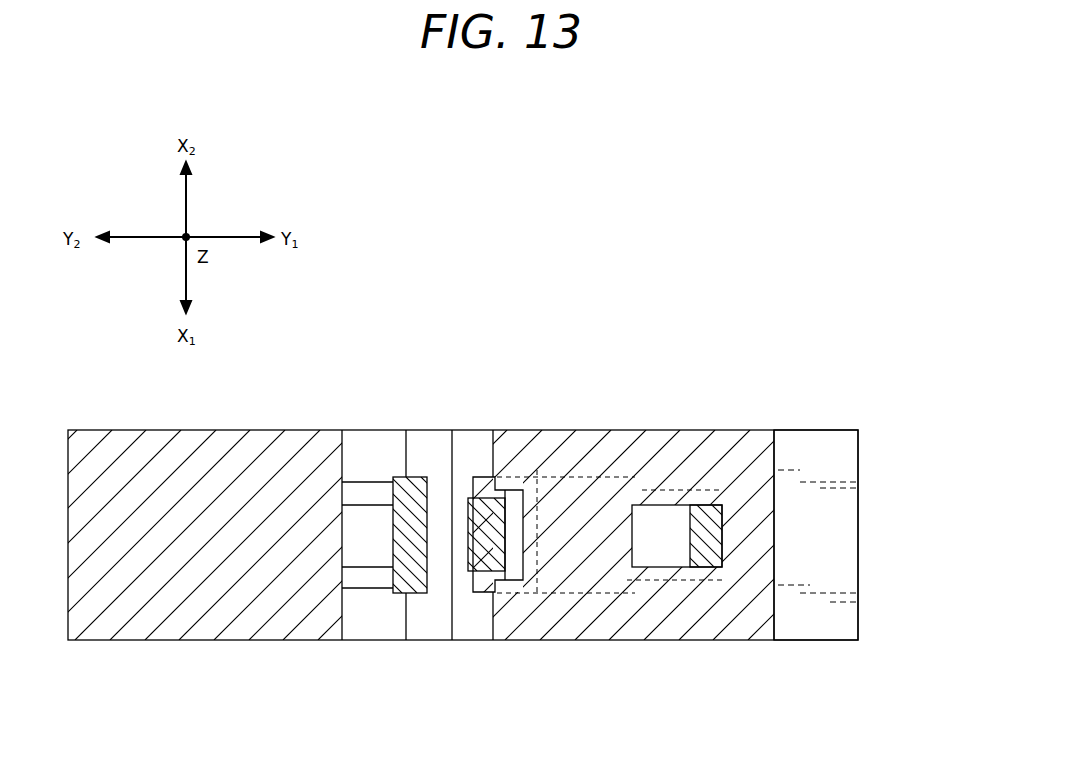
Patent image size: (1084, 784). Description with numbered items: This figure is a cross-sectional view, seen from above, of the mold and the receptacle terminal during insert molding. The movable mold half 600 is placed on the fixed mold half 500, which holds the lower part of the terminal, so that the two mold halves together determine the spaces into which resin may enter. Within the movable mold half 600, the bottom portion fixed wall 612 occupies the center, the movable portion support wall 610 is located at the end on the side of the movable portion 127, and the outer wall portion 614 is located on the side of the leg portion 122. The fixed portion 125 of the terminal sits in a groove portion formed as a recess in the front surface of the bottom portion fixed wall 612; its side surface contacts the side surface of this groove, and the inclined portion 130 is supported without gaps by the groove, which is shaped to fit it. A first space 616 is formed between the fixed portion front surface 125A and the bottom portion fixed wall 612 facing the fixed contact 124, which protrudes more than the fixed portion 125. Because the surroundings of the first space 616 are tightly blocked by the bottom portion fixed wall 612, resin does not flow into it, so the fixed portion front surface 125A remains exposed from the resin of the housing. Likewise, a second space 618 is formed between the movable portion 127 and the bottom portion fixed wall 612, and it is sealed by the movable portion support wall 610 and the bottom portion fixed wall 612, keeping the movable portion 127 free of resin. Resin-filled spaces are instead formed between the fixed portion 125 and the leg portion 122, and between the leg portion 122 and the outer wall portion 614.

The fixed mold half 500 is at (820, 537).
The movable mold half 600 is at (644, 426).
The movable portion support wall 610 is at (753, 528).
The bottom portion fixed wall 612 is at (598, 525).
The outer wall portion 614 is at (209, 578).
The first space 616 is at (512, 560).
The second space 618 is at (658, 541).
The leg portion 122 is at (408, 535).
The fixed contact 124 is at (524, 533).
The fixed portion 125 is at (483, 540).
The fixed portion front surface 125A is at (513, 514).
The movable portion 127 is at (705, 540).
The inclined portion 130 is at (485, 474).